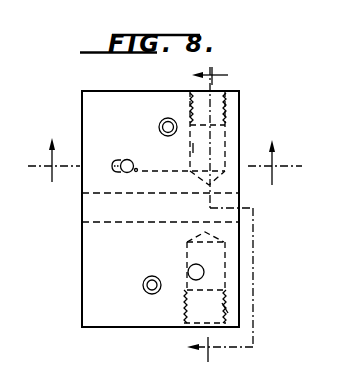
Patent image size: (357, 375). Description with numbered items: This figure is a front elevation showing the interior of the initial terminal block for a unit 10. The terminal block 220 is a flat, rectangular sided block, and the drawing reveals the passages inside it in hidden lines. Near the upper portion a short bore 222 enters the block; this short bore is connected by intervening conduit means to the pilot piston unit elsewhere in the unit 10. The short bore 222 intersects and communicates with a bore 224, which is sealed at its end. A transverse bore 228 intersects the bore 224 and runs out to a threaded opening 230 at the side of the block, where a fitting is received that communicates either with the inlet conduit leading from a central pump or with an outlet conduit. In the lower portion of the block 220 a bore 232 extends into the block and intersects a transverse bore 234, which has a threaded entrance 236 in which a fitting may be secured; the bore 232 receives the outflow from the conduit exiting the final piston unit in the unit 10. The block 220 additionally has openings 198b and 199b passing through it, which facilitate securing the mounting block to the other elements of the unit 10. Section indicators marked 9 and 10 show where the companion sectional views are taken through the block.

The section line 9- 9 is at (210, 213).
The unit 10 is at (165, 153).
The opening 198b is at (175, 118).
The opening 199b is at (150, 295).
The terminal block 220 is at (80, 253).
The short bore 222 is at (130, 159).
The bore 224 is at (137, 171).
The transverse bore 228 is at (197, 148).
The threaded opening 230 is at (241, 107).
The bore 232 is at (189, 267).
The transverse bore 234 is at (187, 262).
The threaded entrance 236 is at (241, 311).